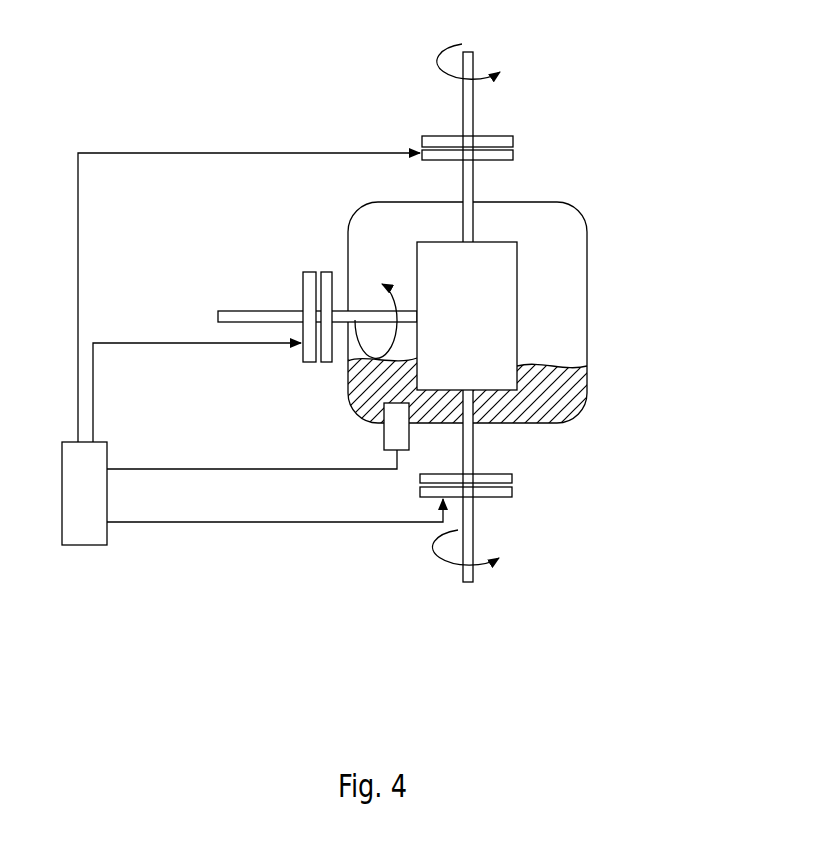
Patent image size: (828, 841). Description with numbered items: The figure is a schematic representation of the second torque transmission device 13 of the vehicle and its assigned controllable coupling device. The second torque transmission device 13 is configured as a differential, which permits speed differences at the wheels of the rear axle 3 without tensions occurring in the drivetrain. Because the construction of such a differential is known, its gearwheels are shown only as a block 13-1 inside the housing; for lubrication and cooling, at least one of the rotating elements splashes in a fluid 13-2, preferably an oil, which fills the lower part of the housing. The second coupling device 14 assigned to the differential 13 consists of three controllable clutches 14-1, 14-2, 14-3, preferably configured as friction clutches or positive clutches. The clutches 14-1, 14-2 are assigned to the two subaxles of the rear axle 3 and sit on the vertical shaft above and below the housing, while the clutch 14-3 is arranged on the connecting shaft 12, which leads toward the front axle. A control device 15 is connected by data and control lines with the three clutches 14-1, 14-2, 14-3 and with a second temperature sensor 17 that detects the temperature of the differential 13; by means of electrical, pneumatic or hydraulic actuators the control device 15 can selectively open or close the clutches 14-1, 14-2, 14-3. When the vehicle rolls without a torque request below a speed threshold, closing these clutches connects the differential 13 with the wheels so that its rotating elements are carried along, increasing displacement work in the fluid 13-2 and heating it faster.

The rear axle 3 is at (473, 113).
The connecting shaft 12 is at (248, 311).
The second torque transmission device 13 is at (505, 273).
The gearwheels of the differential 13-1 is at (487, 328).
The fluid 13-2 is at (563, 398).
The second coupling device 14 is at (363, 272).
The first clutch 14-1 is at (401, 139).
The second clutch 14-2 is at (538, 491).
The third clutch 14-3 is at (275, 362).
The control device 15 is at (96, 504).
The second temperature sensor 17 is at (384, 437).